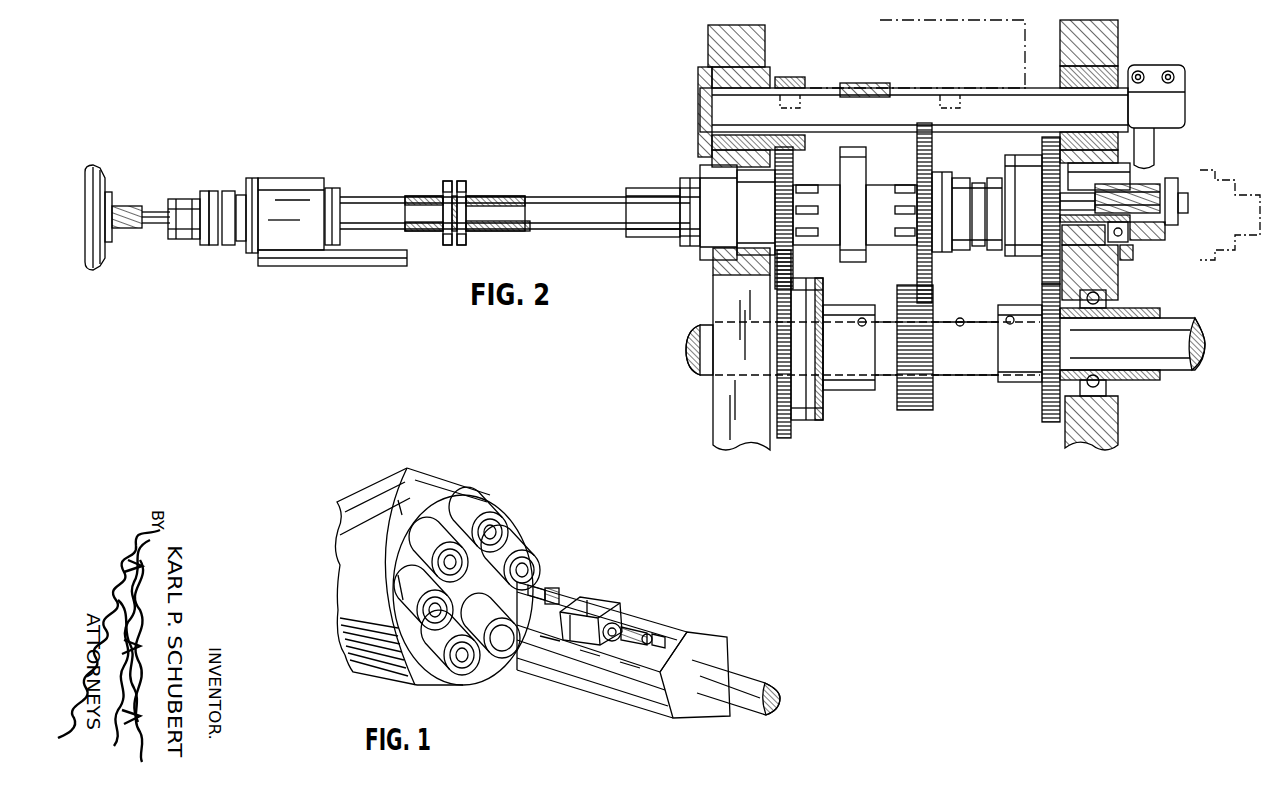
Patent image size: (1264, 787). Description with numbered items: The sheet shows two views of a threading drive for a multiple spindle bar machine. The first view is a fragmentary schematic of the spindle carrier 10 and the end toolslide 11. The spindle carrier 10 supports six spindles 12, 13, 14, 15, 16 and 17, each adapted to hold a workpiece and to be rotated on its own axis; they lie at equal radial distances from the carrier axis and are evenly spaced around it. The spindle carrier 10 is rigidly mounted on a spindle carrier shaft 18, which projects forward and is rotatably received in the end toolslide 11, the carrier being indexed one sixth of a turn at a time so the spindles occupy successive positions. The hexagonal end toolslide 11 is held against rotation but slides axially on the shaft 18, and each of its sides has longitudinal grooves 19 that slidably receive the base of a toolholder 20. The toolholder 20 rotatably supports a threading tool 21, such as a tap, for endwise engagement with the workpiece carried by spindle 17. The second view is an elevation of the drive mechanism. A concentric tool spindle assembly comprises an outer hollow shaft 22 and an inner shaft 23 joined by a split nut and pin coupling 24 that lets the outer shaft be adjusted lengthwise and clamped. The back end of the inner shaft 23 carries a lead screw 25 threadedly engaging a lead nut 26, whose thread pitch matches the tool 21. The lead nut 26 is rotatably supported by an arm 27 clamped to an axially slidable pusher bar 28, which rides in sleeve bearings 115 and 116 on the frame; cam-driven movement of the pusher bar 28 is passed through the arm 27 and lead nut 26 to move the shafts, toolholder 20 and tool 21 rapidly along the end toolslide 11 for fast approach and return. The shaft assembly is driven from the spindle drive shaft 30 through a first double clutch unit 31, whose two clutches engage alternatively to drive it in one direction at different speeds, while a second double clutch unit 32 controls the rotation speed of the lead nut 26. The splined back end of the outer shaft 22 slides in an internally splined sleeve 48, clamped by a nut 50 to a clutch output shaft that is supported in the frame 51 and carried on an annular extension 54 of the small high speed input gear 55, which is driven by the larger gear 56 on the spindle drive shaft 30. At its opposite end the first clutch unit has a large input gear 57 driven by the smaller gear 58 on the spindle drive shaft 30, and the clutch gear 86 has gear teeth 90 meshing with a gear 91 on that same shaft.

In FIG. 1, the spindle carrier 10 is at (520, 529).
In FIG. 1, the end toolslide 11 is at (675, 615).
In FIG. 1, the spindle 12 is at (495, 512).
In FIG. 1, the spindle 13 is at (540, 560).
In FIG. 1, the spindle 14 is at (500, 658).
In FIG. 1, the spindle 15 is at (458, 672).
In FIG. 1, the spindle 16 is at (408, 672).
In FIG. 1, the spindle 17 is at (440, 562).
In FIG. 1, the spindle carrier shaft 18 is at (484, 612).
In FIG. 1, the longitudinal grooves 19 is at (705, 660).
In FIG. 2, the toolholder 20 is at (290, 186).
In FIG. 1, the toolholder 20 is at (598, 590).
In FIG. 2, the threading tool 21 is at (130, 208).
In FIG. 1, the threading tool 21 is at (530, 582).
In FIG. 2, the outer hollow shaft 22 is at (427, 198).
In FIG. 1, the outer hollow shaft 22 is at (638, 625).
In FIG. 2, the inner shaft 23 is at (488, 200).
In FIG. 2, the split nut and pin coupling 24 is at (449, 183).
In FIG. 2, the lead screw 25 is at (1185, 225).
In FIG. 2, the lead nut 26 is at (1128, 242).
In FIG. 2, the arm 27 is at (1165, 138).
In FIG. 2, the pusher bar 28 is at (1018, 90).
In FIG. 2, the spindle drive shaft 30 is at (985, 360).
In FIG. 2, the first double clutch unit 31 is at (878, 222).
In FIG. 2, the second double clutch unit 32 is at (1030, 254).
In FIG. 2, the internally splined sleeve 48 is at (641, 195).
In FIG. 2, the nut 50 is at (690, 180).
In FIG. 2, the frame 51 is at (700, 252).
In FIG. 2, the annular extension 54 is at (772, 206).
In FIG. 2, the high speed input gear 55 is at (793, 160).
In FIG. 2, the gear 56 is at (793, 266).
In FIG. 2, the input gear 57 is at (925, 160).
In FIG. 2, the gear 58 is at (935, 290).
In FIG. 2, the clutch gear 86 is at (966, 178).
In FIG. 2, the gear teeth 90 is at (1043, 160).
In FIG. 2, the gear 91 is at (1042, 290).
In FIG. 2, the sleeve bearing 115 is at (776, 78).
In FIG. 2, the sleeve bearing 116 is at (1110, 66).